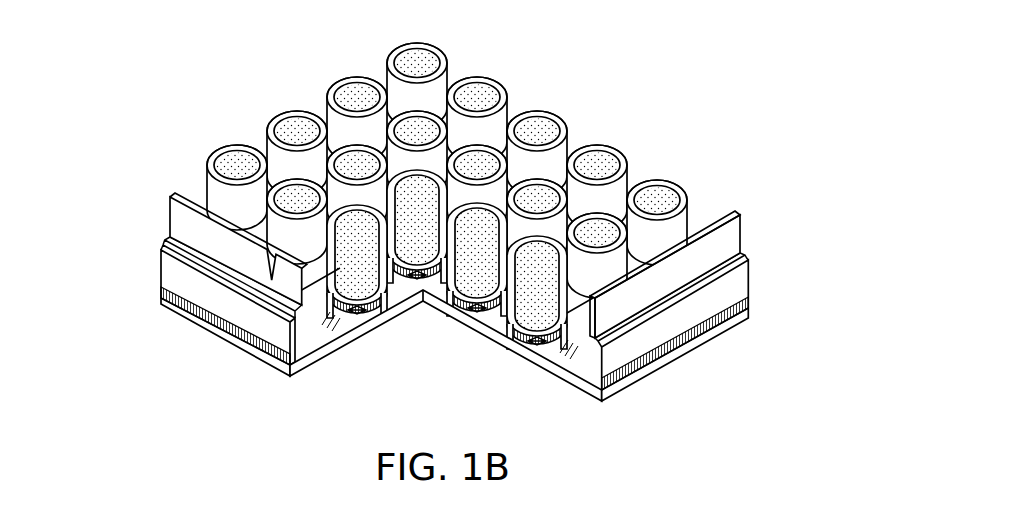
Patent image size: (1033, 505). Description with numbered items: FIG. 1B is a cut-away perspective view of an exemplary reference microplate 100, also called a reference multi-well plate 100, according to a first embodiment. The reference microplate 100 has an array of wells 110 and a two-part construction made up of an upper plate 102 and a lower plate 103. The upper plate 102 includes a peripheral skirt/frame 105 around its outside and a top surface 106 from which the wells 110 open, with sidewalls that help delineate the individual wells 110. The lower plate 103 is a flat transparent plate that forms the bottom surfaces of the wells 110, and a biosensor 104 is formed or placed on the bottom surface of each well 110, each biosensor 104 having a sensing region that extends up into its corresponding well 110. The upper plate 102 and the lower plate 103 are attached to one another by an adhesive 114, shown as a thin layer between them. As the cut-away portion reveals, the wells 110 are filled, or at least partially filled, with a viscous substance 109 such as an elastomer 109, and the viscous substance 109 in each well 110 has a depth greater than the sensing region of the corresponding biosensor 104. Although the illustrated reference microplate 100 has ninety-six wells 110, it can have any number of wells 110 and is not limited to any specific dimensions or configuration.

The reference microplate 100 is at (447, 208).
The upper plate 102 is at (175, 227).
The lower plate 103 is at (224, 342).
The biosensor 104 is at (477, 310).
The peripheral skirt/frame 105 is at (743, 281).
The top surface 106 is at (695, 212).
The viscous substance 109 is at (447, 216).
The well 110 is at (528, 107).
The adhesive 114 is at (162, 292).